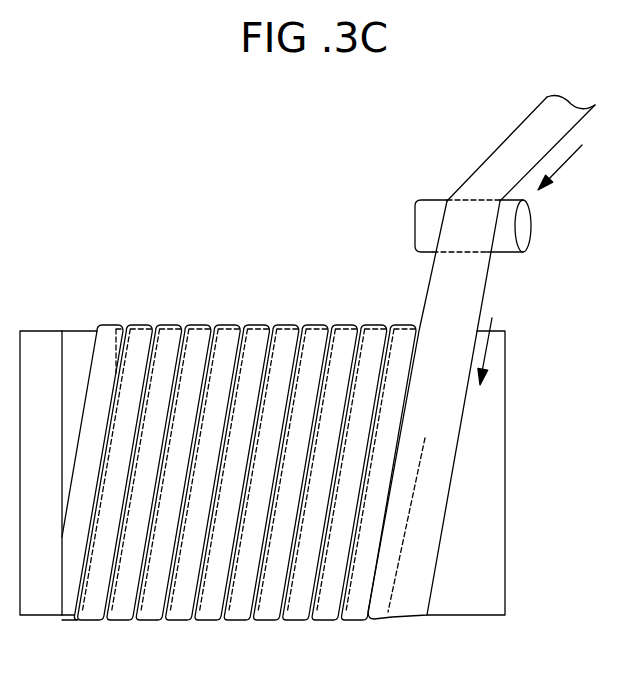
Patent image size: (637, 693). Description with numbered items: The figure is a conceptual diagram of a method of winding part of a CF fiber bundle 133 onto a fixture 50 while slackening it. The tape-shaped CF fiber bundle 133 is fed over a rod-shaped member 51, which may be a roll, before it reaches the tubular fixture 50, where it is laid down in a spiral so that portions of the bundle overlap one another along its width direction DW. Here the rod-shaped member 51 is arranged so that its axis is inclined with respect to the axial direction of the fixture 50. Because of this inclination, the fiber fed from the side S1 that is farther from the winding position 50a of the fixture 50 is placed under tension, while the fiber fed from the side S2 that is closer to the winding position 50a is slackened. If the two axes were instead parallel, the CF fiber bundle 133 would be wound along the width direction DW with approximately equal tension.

The fixture 50 is at (507, 372).
The winding position 50a is at (473, 462).
The rod-shaped member 51 is at (532, 218).
The CF fiber bundle 133 is at (432, 216).
The side away from the winding position S1 is at (406, 299).
The side close to the winding position S2 is at (503, 299).
The width direction DW is at (423, 666).